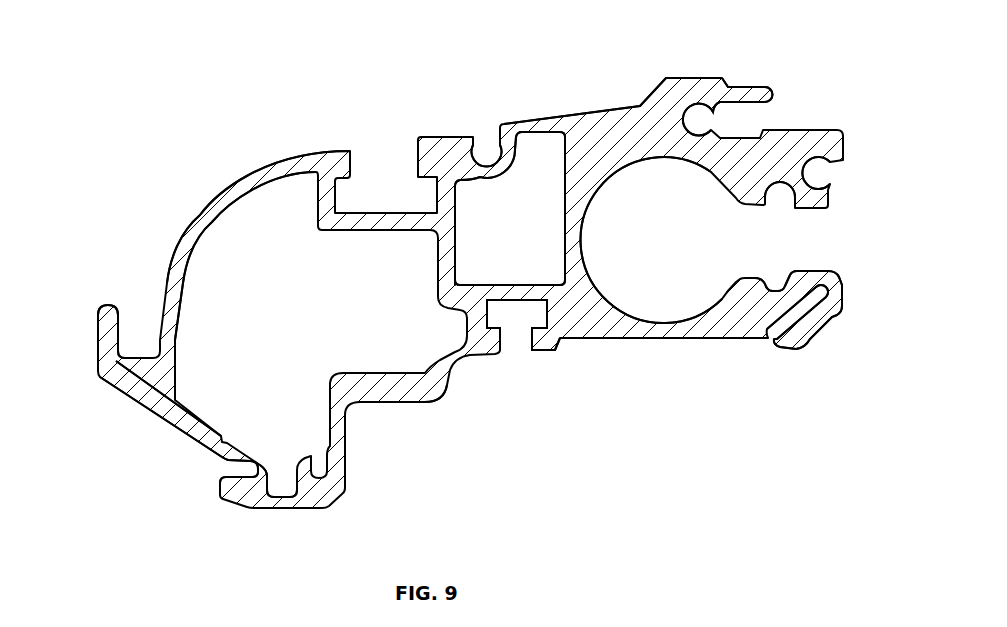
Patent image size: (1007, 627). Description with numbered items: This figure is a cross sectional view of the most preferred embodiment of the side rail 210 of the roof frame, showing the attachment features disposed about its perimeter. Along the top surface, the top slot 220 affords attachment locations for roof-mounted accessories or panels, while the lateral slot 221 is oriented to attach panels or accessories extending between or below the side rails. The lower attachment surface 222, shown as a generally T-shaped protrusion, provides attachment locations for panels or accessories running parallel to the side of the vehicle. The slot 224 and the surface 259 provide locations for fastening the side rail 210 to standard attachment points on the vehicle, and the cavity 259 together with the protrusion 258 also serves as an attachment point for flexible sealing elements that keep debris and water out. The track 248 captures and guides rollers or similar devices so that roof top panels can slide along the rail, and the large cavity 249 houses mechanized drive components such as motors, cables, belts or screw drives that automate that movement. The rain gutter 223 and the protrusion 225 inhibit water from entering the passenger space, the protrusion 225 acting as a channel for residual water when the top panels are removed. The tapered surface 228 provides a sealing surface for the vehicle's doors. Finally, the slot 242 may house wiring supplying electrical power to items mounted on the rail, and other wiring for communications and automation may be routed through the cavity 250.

The side rail 210 is at (201, 167).
The top slot 220 is at (379, 141).
The rain gutter 223 is at (142, 302).
The tapered surface 228 is at (152, 412).
The lower attachment surface 222 is at (215, 466).
The cavity 259 is at (826, 178).
The cavity 250 is at (488, 249).
The slot 242 is at (488, 142).
The slot 224 is at (518, 356).
The protrusion 225 is at (655, 82).
The protrusion 258 is at (771, 88).
The track 248 is at (782, 206).
The cavity 249 is at (703, 127).
The lateral slot 221 is at (821, 324).